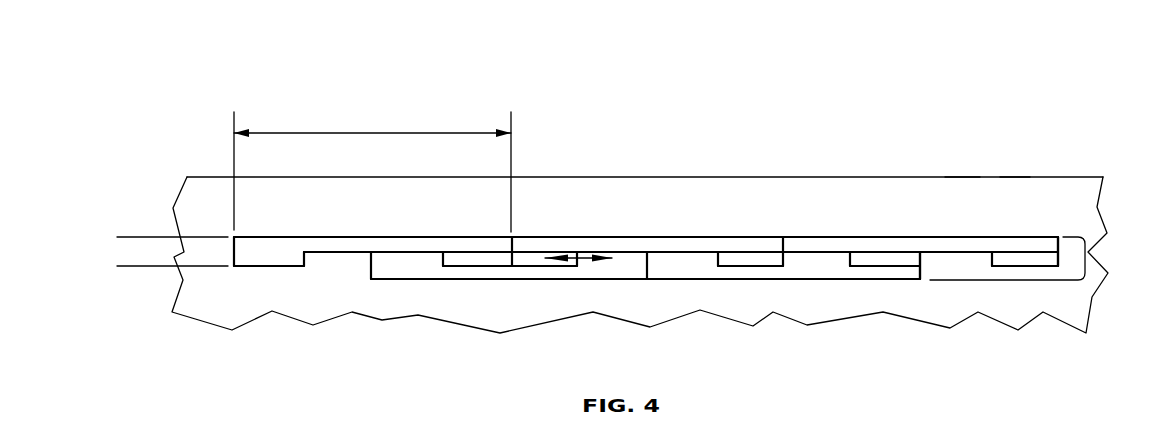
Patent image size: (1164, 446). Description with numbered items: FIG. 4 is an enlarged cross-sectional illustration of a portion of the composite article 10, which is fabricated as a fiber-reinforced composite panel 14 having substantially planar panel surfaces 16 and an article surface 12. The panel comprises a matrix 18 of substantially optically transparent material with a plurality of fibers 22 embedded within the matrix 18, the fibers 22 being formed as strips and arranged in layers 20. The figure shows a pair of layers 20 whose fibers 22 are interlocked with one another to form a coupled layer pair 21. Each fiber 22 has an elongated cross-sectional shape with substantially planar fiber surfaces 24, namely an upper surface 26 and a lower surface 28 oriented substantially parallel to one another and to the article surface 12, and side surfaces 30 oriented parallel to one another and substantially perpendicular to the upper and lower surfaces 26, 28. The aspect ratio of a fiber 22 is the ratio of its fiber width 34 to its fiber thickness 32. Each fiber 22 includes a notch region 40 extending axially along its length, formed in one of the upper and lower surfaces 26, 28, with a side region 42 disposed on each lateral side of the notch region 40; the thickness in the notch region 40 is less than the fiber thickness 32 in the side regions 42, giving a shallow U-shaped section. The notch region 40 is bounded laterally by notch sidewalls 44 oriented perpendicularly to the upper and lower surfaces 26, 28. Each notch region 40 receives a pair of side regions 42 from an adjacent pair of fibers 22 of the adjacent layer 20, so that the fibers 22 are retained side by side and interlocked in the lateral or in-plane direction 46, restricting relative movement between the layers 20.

The composite article 10 is at (1072, 177).
The article surface 12 is at (1013, 177).
The fiber-reinforced composite panel 14 is at (1063, 102).
The panel surfaces 16 is at (963, 177).
The matrix 18 is at (1082, 205).
The layer 20 is at (1068, 248).
The coupled layer pair 21 is at (1088, 254).
The fiber 22 is at (757, 247).
The fiber surfaces 24 is at (637, 237).
The upper surface 26 is at (678, 237).
The lower surface 28 is at (658, 279).
The side surfaces 30 is at (922, 262).
The fiber thickness 32 is at (137, 307).
The fiber width 34 is at (328, 133).
The notch region 40 is at (354, 253).
The side regions 42 is at (250, 266).
The notch sidewalls 44 is at (304, 256).
The in-plane direction 46 is at (573, 255).